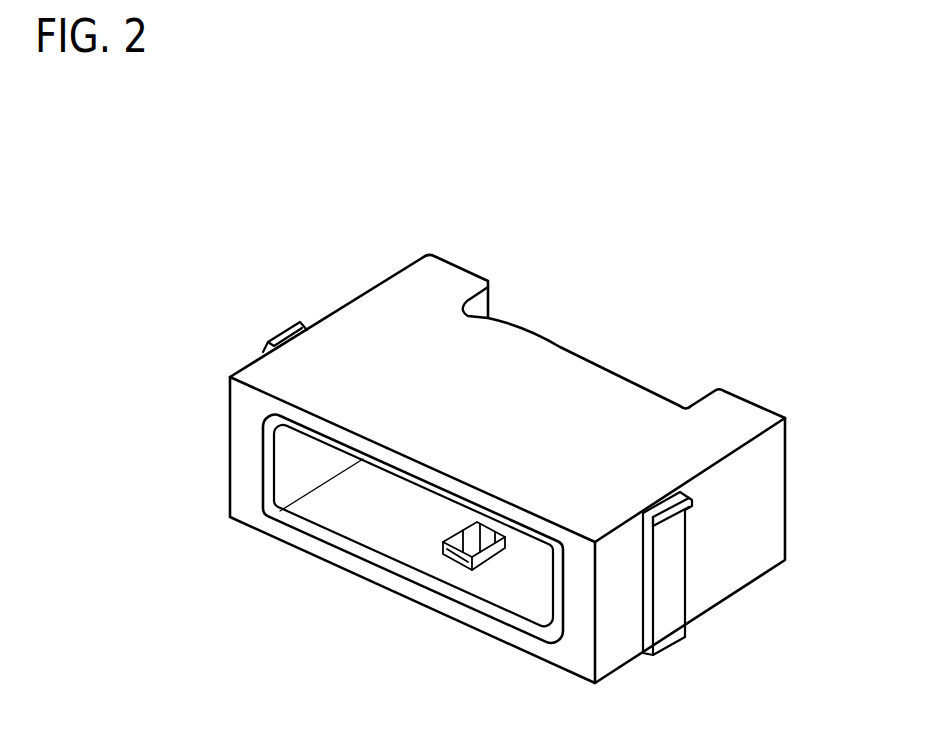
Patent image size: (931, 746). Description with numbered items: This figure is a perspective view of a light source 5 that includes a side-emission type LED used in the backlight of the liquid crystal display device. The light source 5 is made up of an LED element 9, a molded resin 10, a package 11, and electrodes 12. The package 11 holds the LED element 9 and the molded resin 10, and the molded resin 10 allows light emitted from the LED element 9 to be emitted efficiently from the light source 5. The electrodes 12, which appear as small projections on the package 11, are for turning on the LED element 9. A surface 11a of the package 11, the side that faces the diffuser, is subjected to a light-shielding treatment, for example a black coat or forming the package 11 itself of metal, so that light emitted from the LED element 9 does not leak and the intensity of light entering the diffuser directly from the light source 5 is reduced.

The light source 5 is at (704, 221).
The LED element 9 is at (462, 560).
The molded resin 10 is at (307, 460).
The package 11 is at (785, 468).
The surface 11a is at (446, 293).
The electrodes 12 is at (287, 323).